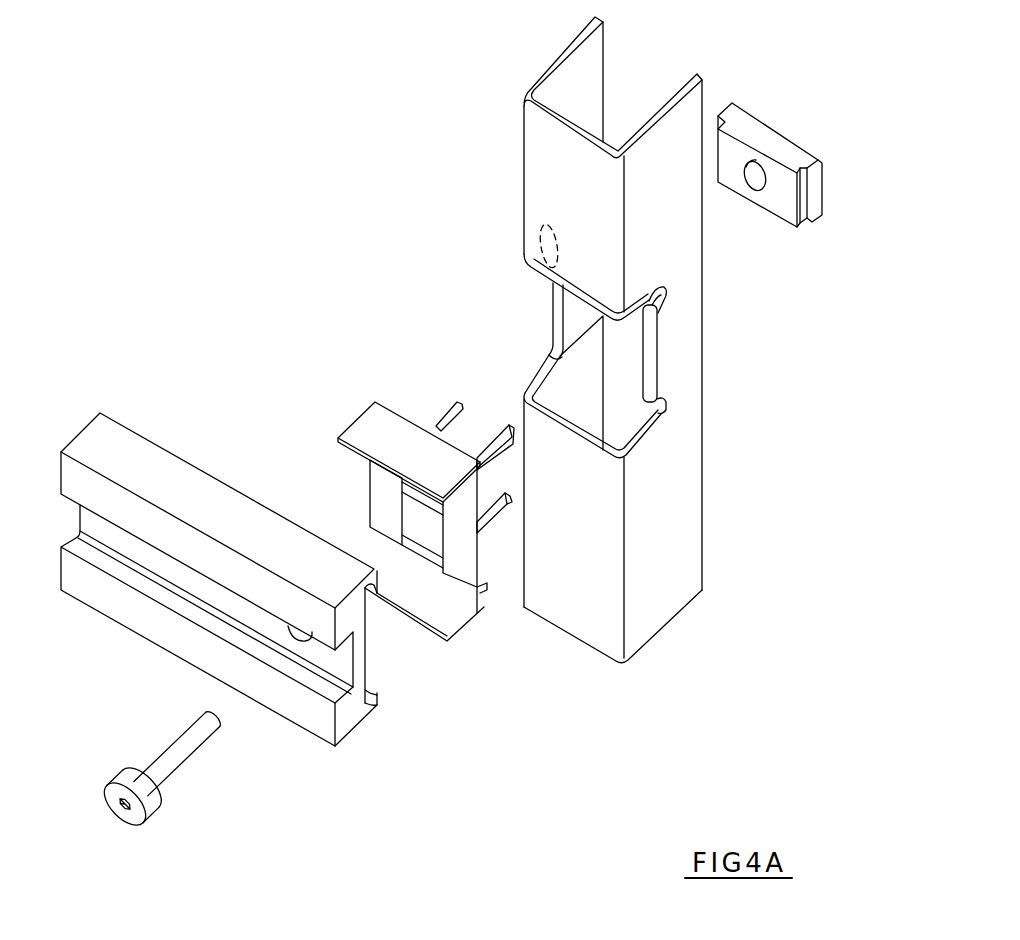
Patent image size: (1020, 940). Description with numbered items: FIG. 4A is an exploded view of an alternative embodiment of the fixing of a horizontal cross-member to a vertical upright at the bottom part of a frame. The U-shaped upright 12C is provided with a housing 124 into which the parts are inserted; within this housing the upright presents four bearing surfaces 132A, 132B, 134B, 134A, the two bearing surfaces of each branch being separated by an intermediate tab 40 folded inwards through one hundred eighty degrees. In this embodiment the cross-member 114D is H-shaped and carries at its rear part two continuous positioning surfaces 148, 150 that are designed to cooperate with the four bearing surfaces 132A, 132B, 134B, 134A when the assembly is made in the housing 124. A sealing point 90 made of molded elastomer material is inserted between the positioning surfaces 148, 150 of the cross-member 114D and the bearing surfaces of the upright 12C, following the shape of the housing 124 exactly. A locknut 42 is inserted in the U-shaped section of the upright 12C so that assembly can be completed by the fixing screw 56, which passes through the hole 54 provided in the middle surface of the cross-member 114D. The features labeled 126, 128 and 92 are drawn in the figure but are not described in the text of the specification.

The vertical upright 12C is at (682, 537).
The upper cut edge of channel 128 is at (572, 292).
The bearing surface 132B is at (547, 232).
The bearing surface 132A is at (557, 352).
The housing 124 is at (542, 378).
The lower bend of tongue 126 is at (588, 447).
The intermediate tab 40 is at (645, 352).
The bearing surface 134A is at (665, 410).
The bearing surface 134B is at (665, 300).
The locknut 42 is at (755, 128).
The cross-member 114D is at (147, 467).
The hole 54 is at (297, 637).
The fixing screw 56 is at (177, 743).
The sealing point 90 is at (382, 423).
The cross bar of clip 92 is at (437, 528).
The positioning surface 148 is at (378, 588).
The positioning surface 150 is at (380, 693).